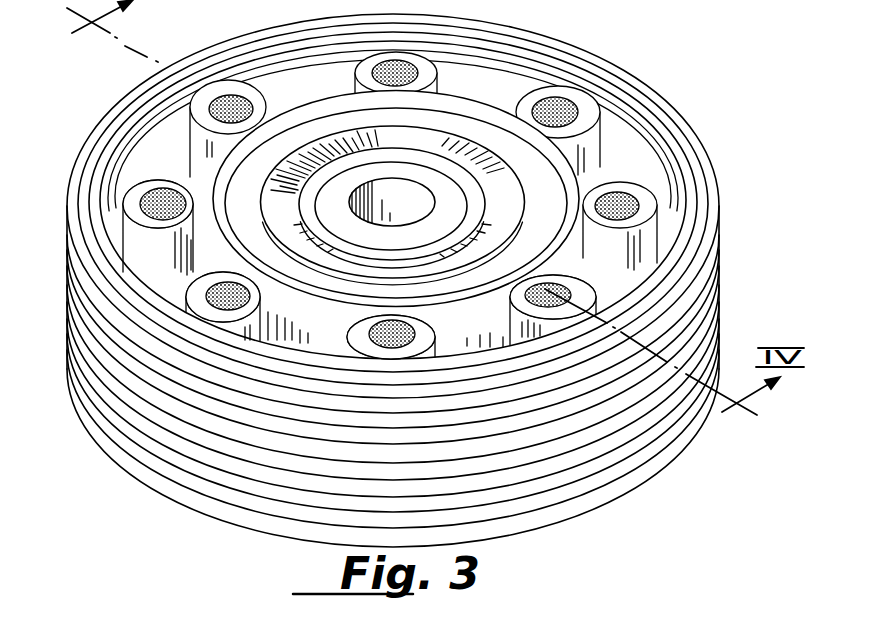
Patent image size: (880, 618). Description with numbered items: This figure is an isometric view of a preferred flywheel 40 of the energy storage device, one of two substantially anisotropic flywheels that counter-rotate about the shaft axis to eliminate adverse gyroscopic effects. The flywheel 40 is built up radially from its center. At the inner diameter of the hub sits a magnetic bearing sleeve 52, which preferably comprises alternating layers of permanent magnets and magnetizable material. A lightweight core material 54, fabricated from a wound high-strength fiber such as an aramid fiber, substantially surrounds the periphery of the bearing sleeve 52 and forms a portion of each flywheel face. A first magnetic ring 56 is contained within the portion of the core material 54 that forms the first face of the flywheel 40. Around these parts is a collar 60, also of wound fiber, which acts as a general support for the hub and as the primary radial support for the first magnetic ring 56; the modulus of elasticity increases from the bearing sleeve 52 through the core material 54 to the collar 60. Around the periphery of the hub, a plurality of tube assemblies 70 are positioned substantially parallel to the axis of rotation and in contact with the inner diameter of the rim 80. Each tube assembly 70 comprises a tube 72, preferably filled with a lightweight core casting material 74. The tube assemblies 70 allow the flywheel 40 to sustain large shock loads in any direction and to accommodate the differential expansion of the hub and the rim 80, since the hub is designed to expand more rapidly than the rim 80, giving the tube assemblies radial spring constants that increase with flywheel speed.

The flywheel 40 is at (722, 304).
The magnetic bearing sleeve 52 is at (430, 178).
The lightweight core material 54 is at (297, 217).
The first magnetic ring 56 is at (508, 210).
The collar 60 is at (316, 106).
The tube assemblies 70 is at (203, 108).
The tube 72 is at (132, 212).
The lightweight core casting material 74 is at (238, 232).
The rim 80 is at (718, 265).